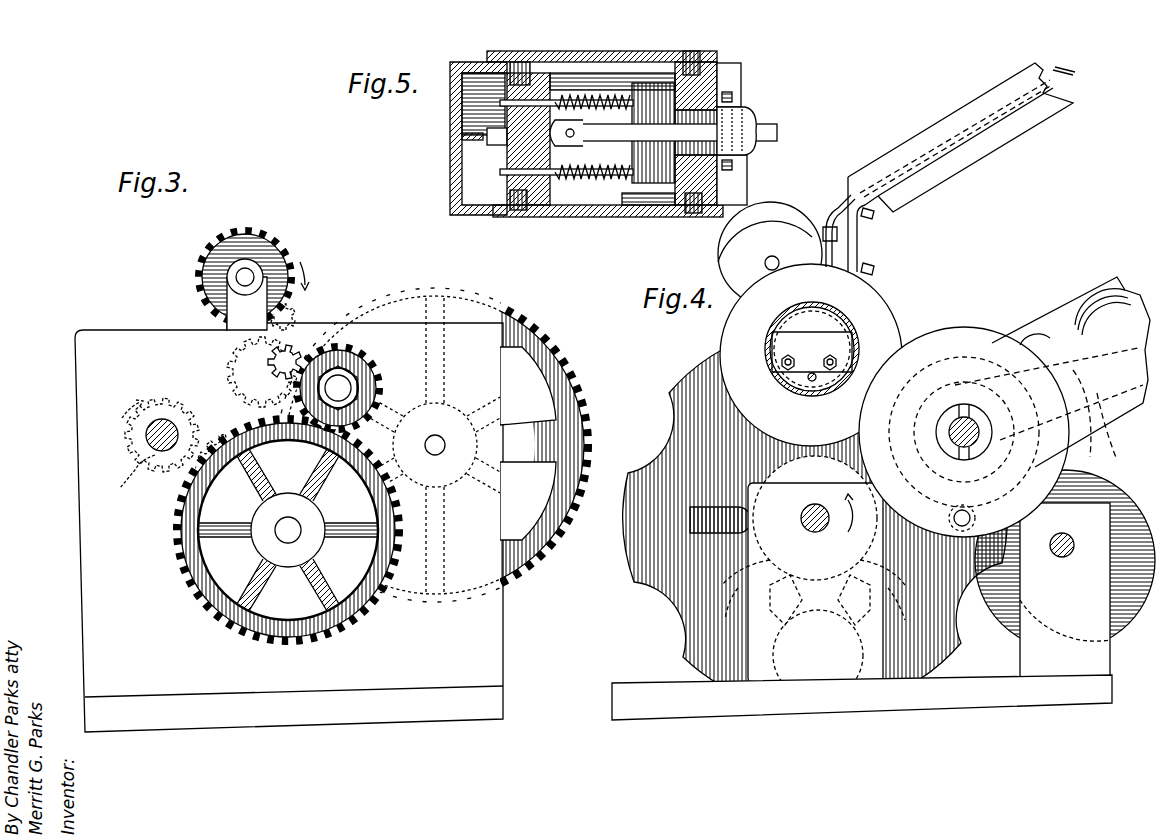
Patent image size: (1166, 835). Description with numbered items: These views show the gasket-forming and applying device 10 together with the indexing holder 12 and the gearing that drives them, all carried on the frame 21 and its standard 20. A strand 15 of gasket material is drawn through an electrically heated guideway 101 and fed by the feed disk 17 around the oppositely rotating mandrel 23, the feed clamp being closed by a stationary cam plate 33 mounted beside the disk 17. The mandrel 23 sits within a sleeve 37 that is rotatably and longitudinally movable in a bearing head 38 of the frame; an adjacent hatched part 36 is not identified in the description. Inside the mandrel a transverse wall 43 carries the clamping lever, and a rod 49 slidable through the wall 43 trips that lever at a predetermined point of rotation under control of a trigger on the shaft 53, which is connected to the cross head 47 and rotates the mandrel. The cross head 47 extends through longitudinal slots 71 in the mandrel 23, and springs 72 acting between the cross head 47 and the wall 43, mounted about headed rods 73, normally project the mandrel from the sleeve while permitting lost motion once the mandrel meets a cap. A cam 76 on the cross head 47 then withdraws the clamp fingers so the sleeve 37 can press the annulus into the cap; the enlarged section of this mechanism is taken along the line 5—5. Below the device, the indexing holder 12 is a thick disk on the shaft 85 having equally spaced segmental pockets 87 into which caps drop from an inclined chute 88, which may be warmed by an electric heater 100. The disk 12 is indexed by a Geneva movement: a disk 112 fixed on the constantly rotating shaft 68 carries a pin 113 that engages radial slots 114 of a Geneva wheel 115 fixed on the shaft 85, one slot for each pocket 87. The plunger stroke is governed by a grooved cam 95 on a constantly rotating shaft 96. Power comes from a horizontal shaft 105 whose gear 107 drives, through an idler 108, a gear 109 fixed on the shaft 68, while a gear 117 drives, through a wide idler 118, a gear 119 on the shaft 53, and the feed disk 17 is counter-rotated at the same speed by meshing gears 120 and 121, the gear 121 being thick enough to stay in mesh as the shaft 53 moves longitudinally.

In FIG. 4, the section line 5— 5 is at (750, 340).
In FIG. 4, the gasket-forming and applying device 10 is at (852, 318).
In FIG. 4, the indexing holder 12 is at (928, 680).
In FIG. 4, the strand of gasket material 15 is at (830, 200).
In FIG. 4, the feed disk 17 is at (735, 246).
In FIG. 3, the standard 20 is at (503, 650).
In FIG. 3, the frame 21 is at (400, 705).
In FIG. 4, the frame 21 is at (718, 705).
In FIG. 5, the mandrel 23 is at (588, 217).
In FIG. 4, the cam plate 33 is at (800, 196).
In FIG. 5, the housing block 36 is at (612, 133).
In FIG. 5, the sleeve 37 is at (700, 51).
In FIG. 4, the bearing head 38 is at (735, 333).
In FIG. 4, the transverse wall 43 is at (810, 335).
In FIG. 5, the transverse wall 43 is at (450, 118).
In FIG. 5, the cross head 47 is at (741, 80).
In FIG. 5, the rod 49 is at (777, 133).
In FIG. 5, the shaft 53 is at (750, 115).
In FIG. 3, the shaft 68 is at (445, 440).
In FIG. 4, the shaft 68 is at (950, 440).
In FIG. 5, the longitudinal slots 71 is at (640, 73).
In FIG. 5, the springs 72 is at (595, 100).
In FIG. 5, the rods 73 is at (580, 106).
In FIG. 5, the cam 76 is at (640, 87).
In FIG. 3, the shaft 85 is at (283, 530).
In FIG. 4, the shaft 85 is at (815, 532).
In FIG. 4, the segmental pockets 87 is at (690, 395).
In FIG. 4, the inclined chute 88 is at (1068, 313).
In FIG. 4, the grooved cam 95 is at (1008, 595).
In FIG. 4, the shaft 96 is at (1062, 557).
In FIG. 4, the electric heater 100 is at (1128, 464).
In FIG. 4, the electrically heated guideway 101 is at (930, 128).
In FIG. 3, the horizontal shaft 105 is at (144, 444).
In FIG. 3, the gear 107 is at (205, 480).
In FIG. 3, the idler 108 is at (255, 525).
In FIG. 3, the gear 109 is at (590, 350).
In FIG. 4, the disk 112 is at (962, 355).
In FIG. 4, the pin 113 is at (952, 565).
In FIG. 4, the radial slots 114 is at (868, 605).
In FIG. 4, the Geneva wheel 115 is at (915, 580).
In FIG. 3, the gear 117 is at (270, 640).
In FIG. 3, the idler 118 is at (360, 370).
In FIG. 3, the gear 119 is at (290, 352).
In FIG. 3, the gear 120 is at (200, 262).
In FIG. 3, the gear 121 is at (290, 310).